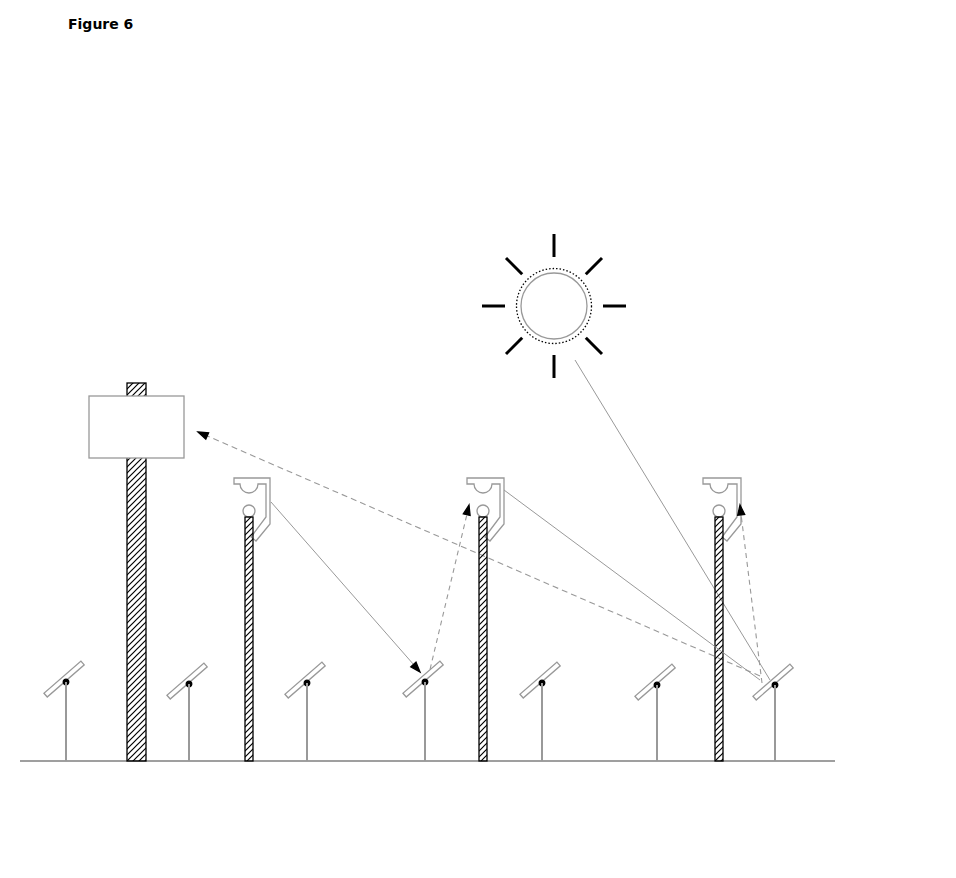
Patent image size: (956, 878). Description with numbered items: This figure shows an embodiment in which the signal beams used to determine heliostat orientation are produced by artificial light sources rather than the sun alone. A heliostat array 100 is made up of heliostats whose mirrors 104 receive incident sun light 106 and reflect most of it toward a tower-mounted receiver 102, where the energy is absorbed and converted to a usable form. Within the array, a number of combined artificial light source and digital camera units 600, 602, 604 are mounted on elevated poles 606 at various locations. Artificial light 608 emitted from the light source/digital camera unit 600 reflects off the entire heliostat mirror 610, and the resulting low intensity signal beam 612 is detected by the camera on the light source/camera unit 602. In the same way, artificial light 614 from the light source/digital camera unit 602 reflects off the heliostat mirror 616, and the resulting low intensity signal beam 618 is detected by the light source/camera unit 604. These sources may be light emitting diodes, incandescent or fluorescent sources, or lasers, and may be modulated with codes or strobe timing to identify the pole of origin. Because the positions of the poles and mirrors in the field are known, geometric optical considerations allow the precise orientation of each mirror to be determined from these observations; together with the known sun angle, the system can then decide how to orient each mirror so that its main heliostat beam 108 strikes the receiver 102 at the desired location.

The heliostat array 100 is at (165, 270).
The receiver 102 is at (107, 390).
The mirror 104 is at (648, 678).
The sun light 106 is at (607, 410).
The main heliostat beam 108 is at (362, 500).
The light source/digital camera unit 600 is at (252, 476).
The light source/camera unit 602 is at (483, 476).
The light source/camera unit 604 is at (718, 476).
The elevated pole 606 is at (488, 640).
The artificial light 608 is at (338, 577).
The heliostat mirror 610 is at (400, 688).
The low intensity signal beam 612 is at (436, 618).
The artificial light 614 is at (566, 530).
The heliostat mirror 616 is at (790, 683).
The low intensity signal beam 618 is at (760, 595).